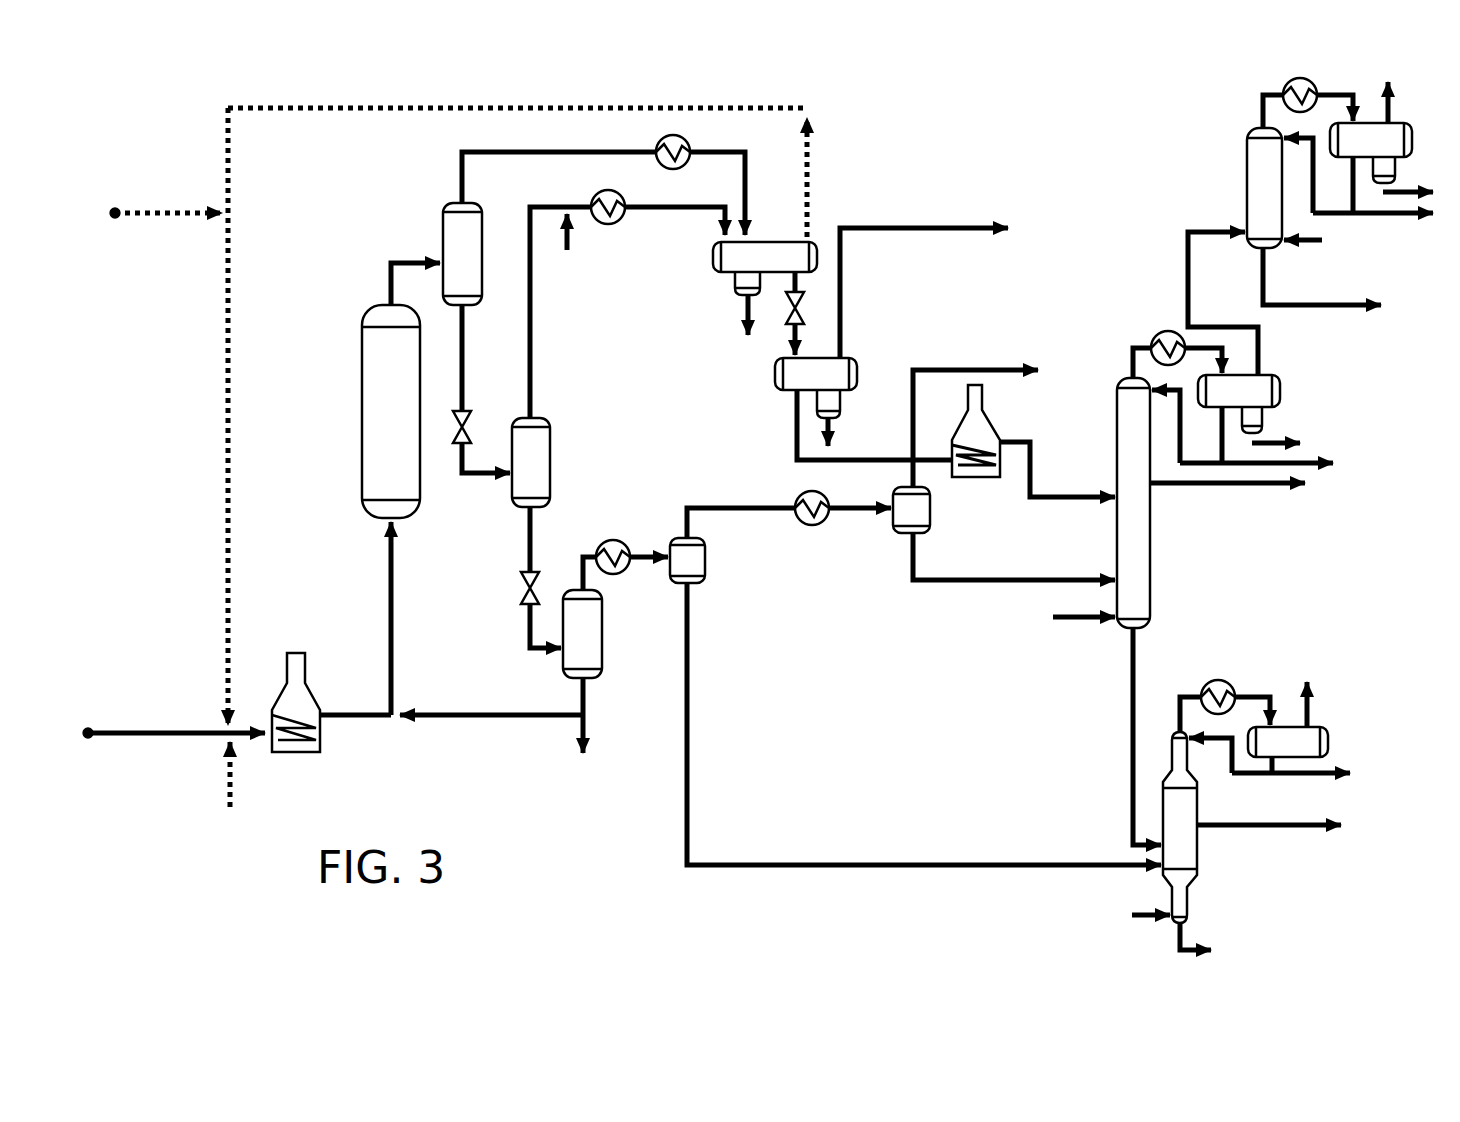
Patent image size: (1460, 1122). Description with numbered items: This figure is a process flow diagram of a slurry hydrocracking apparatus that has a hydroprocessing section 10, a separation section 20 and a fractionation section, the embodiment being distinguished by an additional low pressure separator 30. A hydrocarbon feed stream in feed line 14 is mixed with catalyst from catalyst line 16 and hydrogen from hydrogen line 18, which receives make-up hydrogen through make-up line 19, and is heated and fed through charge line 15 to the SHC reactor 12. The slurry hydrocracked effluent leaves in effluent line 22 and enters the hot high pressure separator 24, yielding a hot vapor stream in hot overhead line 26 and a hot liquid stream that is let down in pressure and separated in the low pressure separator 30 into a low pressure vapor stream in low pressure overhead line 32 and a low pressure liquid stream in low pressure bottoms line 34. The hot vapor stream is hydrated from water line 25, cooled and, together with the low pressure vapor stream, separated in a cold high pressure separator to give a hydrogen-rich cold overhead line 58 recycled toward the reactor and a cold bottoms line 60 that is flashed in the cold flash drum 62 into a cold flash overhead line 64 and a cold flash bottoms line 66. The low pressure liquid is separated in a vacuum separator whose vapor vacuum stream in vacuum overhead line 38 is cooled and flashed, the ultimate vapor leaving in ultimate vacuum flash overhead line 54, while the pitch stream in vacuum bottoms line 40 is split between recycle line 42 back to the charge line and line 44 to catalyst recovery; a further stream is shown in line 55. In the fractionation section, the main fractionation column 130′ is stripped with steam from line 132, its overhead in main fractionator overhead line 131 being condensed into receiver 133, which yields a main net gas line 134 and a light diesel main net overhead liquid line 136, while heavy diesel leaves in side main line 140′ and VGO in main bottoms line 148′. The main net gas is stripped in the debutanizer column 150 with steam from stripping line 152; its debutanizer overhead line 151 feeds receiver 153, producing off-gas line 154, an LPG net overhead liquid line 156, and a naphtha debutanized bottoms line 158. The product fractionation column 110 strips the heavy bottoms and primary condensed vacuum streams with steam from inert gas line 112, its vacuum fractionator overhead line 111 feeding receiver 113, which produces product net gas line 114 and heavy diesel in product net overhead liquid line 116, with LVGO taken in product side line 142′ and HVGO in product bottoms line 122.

The hydroprocessing section 10 is at (207, 307).
The SHC reactor 12 is at (362, 355).
The feed line 14 is at (197, 730).
The charge line 15 is at (392, 608).
The catalyst line 16 is at (233, 770).
The hydrogen line 18 is at (230, 403).
The make-up line 19 is at (180, 212).
The separation section 20 is at (582, 90).
The effluent line 22 is at (410, 263).
The hot high pressure separator 24 is at (482, 235).
The water line 25 is at (570, 240).
The hot overhead line 26 is at (640, 157).
The low pressure separator 30 is at (552, 460).
The low pressure overhead line 32 is at (532, 290).
The low pressure bottoms line 34 is at (532, 563).
The vacuum overhead line 38 is at (655, 560).
The vacuum bottoms line 40 is at (586, 698).
The recycle line 42 is at (520, 712).
The line 44 is at (586, 728).
The ultimate vacuum flash overhead line 54 is at (978, 370).
The liquid feed line 55 is at (947, 585).
The cold overhead line 58 is at (808, 186).
The cold bottoms line 60 is at (798, 283).
The cold flash drum 62 is at (775, 372).
The cold flash overhead line 64 is at (840, 295).
The cold flash bottoms line 66 is at (838, 462).
The product fractionation column 110 is at (1198, 812).
The vacuum fractionator overhead line 111 is at (1175, 700).
The inert gas line 112 is at (1138, 918).
The receiver 113 is at (1332, 735).
The product net gas line 114 is at (1297, 725).
The product net overhead liquid line 116 is at (1335, 770).
The product bottoms line 122 is at (1195, 942).
The main fractionation column 130′ is at (1117, 463).
The main fractionator overhead line 131 is at (1130, 362).
The line 132 is at (1073, 630).
The receiver 133 is at (1283, 385).
The main net gas line 134 is at (1188, 275).
The main net overhead liquid line 136 is at (1318, 470).
The side main line 140′ is at (1182, 486).
The product side line 142′ is at (1278, 832).
The main bottoms line 148′ is at (1133, 765).
The debutanizer column 150 is at (1247, 193).
The debutanizer overhead line 151 is at (1263, 110).
The stripping line 152 is at (1318, 247).
The receiver 153 is at (1412, 135).
The off-gas line 154 is at (1380, 105).
The net overhead liquid line 156 is at (1415, 220).
The debutanized bottoms line 158 is at (1290, 300).